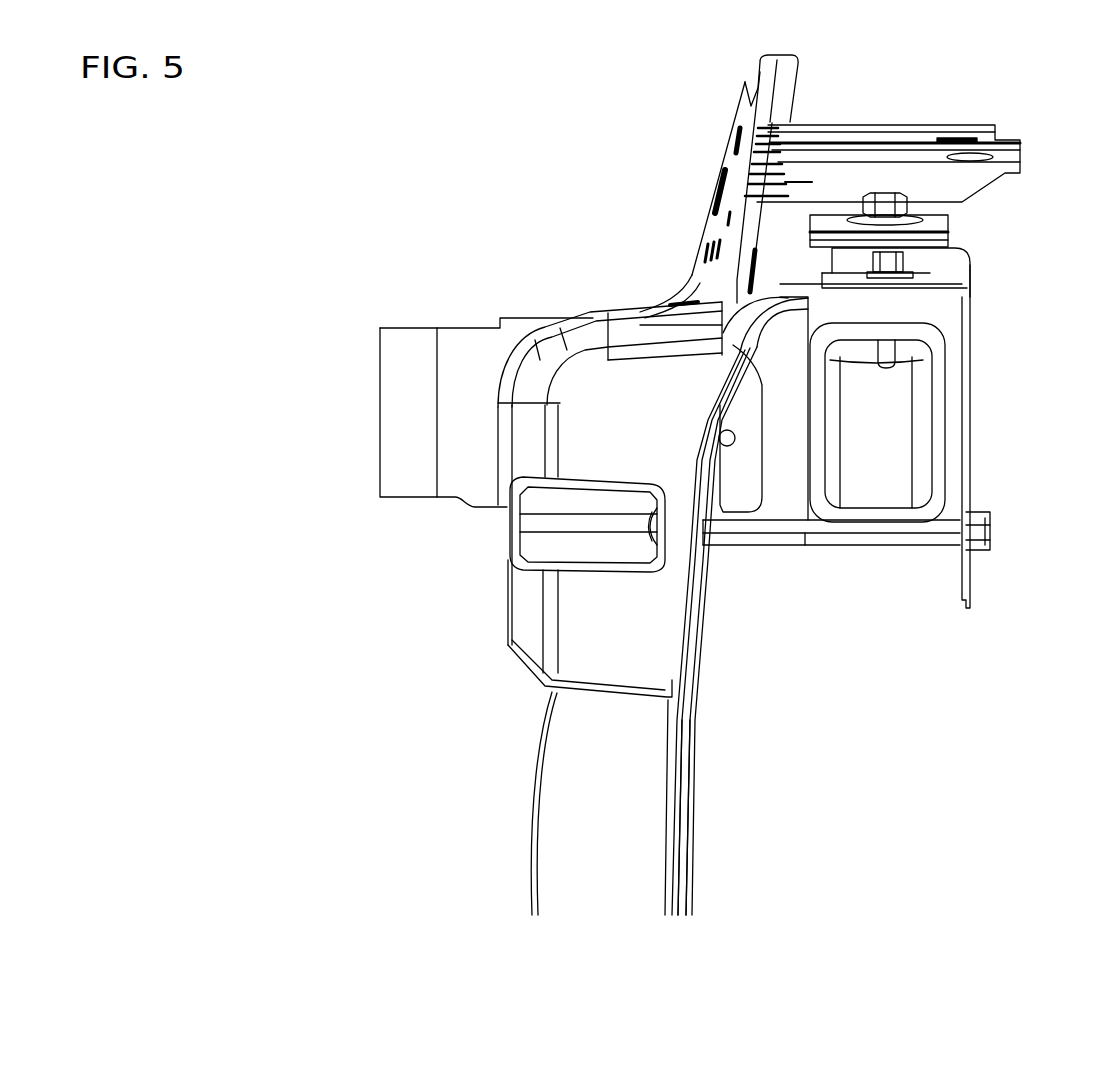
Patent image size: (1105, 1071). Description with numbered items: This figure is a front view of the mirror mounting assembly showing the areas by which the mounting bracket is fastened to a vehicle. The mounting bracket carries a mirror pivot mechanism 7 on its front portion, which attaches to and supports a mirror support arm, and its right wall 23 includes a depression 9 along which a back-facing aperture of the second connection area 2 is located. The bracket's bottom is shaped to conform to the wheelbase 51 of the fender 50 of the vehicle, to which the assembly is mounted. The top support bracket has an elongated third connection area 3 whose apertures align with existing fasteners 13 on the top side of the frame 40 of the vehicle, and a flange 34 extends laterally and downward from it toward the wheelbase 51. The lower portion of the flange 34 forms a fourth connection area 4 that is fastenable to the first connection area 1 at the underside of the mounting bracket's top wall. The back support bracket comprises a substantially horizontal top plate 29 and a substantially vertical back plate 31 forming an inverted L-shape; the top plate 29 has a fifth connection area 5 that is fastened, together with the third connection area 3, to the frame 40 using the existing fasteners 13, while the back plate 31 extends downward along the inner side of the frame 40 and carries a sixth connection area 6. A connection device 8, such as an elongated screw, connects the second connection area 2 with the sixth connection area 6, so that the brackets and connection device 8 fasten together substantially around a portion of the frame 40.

The first connection area 1 is at (613, 303).
The second connection area 2 is at (693, 645).
The third connection area 3 is at (810, 230).
The fourth connection area 4 is at (755, 352).
The fifth connection area 5 is at (962, 242).
The sixth connection area 6 is at (978, 570).
The mirror pivot mechanism 7 is at (399, 408).
The connection device 8 is at (767, 537).
The depression 9 is at (532, 538).
The existing fasteners 13 is at (887, 197).
The right wall 23 is at (577, 625).
The top plate 29 is at (940, 258).
The back plate 31 is at (967, 407).
The flange 34 is at (755, 290).
The frame 40 is at (935, 458).
The fender 50 is at (682, 747).
The wheelbase 51 is at (560, 798).